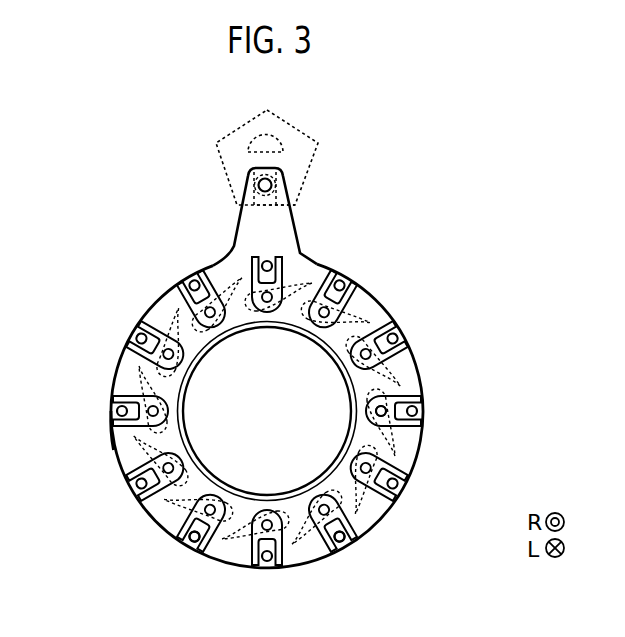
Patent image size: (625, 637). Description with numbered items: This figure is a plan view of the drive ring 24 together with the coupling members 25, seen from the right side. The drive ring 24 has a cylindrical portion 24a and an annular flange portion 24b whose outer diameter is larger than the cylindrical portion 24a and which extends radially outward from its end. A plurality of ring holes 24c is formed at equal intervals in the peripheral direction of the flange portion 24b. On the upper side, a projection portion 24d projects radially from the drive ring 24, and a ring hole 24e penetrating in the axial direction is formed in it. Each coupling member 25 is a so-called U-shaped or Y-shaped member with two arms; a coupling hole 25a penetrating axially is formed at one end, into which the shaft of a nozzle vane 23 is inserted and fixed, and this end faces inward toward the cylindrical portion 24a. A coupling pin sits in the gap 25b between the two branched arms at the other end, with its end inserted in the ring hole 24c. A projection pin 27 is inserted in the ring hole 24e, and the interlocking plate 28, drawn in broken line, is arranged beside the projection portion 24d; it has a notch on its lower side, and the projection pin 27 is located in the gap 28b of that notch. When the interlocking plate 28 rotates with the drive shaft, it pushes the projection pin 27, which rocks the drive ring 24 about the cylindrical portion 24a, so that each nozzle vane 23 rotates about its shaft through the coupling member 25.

The nozzle vane 23 is at (141, 368).
The drive ring 24 is at (382, 300).
The cylindrical portion 24a is at (372, 390).
The flange portion 24b is at (128, 447).
The ring hole 24c is at (340, 543).
The projection portion 24d is at (291, 191).
The ring hole 24e is at (259, 186).
The coupling member 25 is at (215, 540).
The coupling hole 25a is at (262, 545).
The gap 25b is at (185, 545).
The projection pin 27 is at (253, 207).
The interlocking plate 28 is at (308, 133).
The gap 28b is at (274, 206).